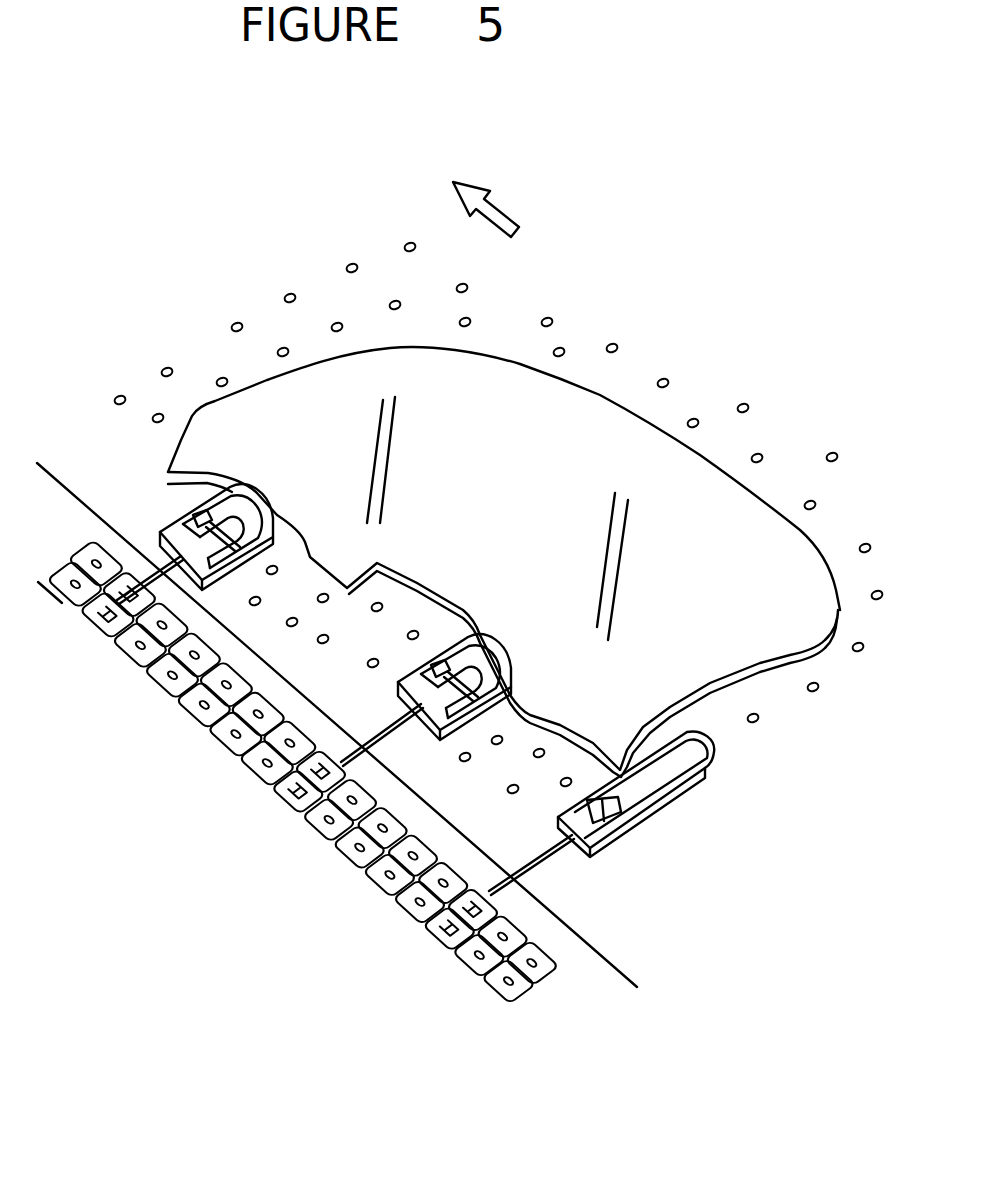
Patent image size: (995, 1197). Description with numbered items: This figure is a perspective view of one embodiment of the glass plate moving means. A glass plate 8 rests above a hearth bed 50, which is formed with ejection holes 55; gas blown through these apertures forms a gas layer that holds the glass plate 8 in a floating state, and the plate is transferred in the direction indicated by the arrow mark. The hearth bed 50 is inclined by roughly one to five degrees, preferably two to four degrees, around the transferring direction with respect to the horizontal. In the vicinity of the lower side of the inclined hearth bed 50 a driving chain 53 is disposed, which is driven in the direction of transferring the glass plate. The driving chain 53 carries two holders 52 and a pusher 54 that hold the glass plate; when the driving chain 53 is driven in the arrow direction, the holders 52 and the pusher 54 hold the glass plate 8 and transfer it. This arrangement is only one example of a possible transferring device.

The hearth bed 50 is at (498, 488).
The glass plate 8 is at (777, 562).
The ejection holes 55 is at (579, 334).
The holders 52 is at (170, 522).
The driving chain 53 is at (478, 965).
The pusher 54 is at (657, 805).